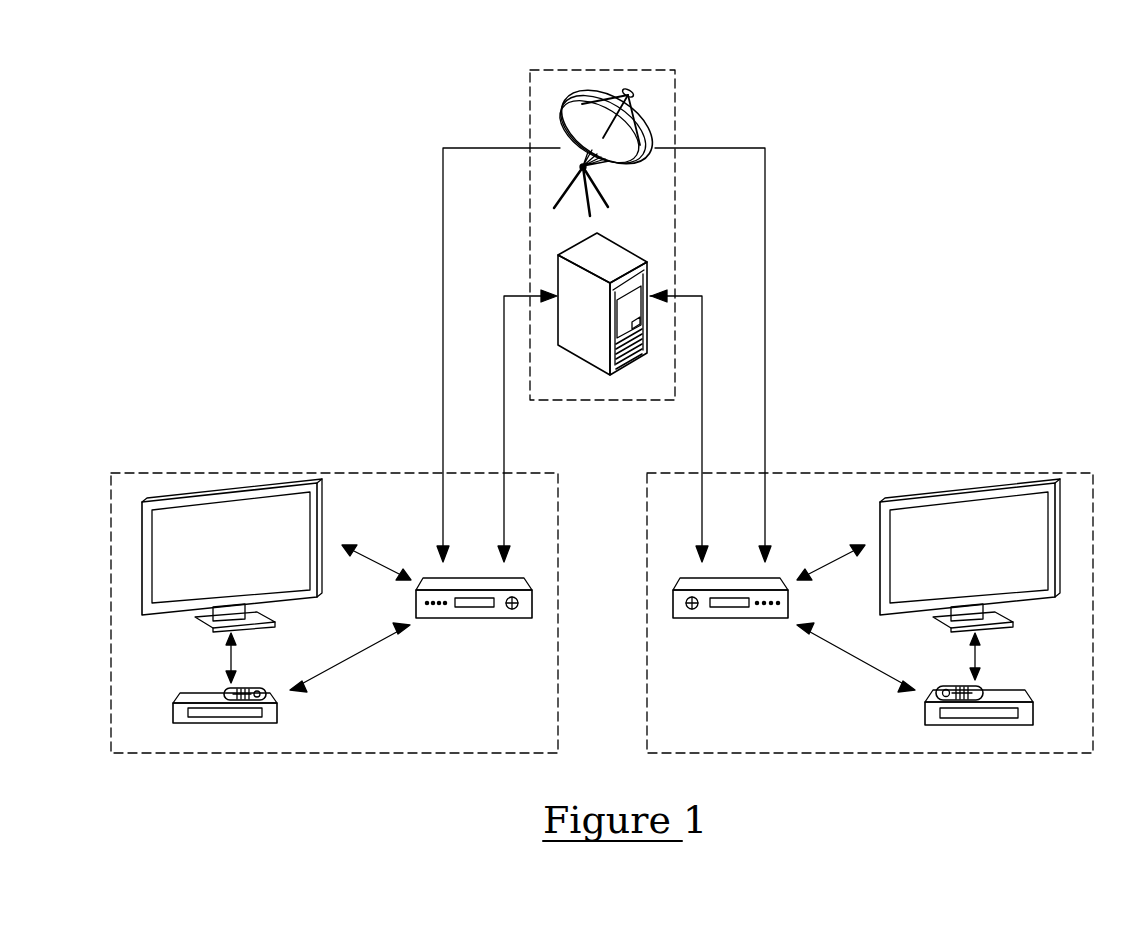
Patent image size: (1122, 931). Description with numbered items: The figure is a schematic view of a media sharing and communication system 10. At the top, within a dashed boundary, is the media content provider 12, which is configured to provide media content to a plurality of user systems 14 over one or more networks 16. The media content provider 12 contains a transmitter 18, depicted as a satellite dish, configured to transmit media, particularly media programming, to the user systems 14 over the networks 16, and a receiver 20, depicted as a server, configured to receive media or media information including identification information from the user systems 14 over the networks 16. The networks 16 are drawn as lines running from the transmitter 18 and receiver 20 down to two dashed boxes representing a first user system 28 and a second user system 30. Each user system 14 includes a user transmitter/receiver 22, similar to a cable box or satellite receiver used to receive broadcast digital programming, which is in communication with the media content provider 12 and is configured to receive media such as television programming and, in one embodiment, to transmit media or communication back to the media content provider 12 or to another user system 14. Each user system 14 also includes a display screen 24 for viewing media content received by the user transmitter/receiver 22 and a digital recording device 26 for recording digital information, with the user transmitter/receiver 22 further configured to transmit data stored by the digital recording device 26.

The media sharing and communication system 10 is at (894, 186).
The media content provider 12 is at (545, 70).
The user system 14 is at (333, 473).
The network 16 is at (443, 354).
The transmitter 18 is at (572, 137).
The receiver 20 is at (628, 258).
The user transmitter/receiver 22 is at (475, 620).
The display screen 24 is at (320, 512).
The digital recording device 26 is at (280, 708).
The first user system 28 is at (548, 473).
The second user system 30 is at (648, 473).